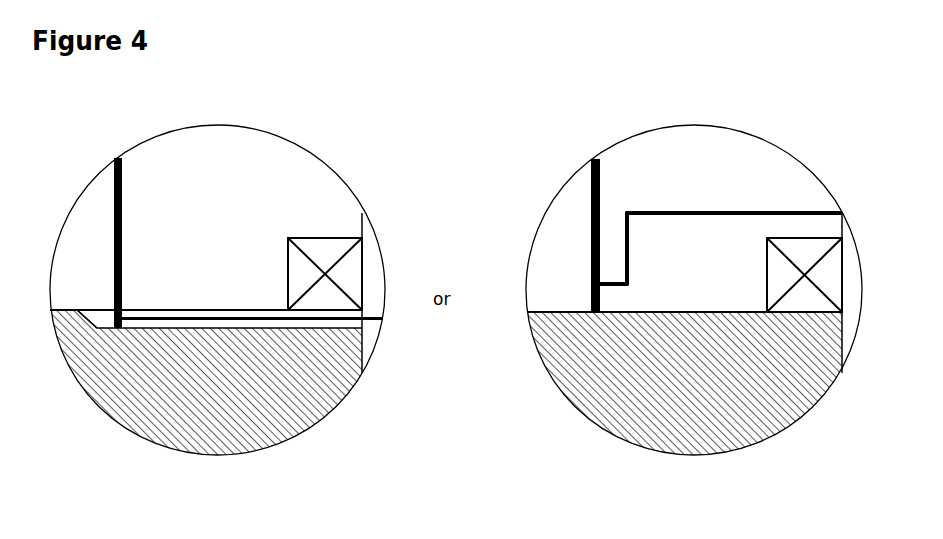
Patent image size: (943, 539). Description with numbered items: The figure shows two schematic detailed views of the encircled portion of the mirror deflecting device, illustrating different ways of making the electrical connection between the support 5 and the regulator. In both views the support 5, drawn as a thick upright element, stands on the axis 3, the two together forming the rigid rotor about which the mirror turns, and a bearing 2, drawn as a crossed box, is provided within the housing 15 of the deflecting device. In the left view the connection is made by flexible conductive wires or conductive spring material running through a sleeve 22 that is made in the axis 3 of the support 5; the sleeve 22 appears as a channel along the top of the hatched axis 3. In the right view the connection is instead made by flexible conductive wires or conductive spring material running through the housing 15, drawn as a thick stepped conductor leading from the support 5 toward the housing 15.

The bearings 2 is at (352, 270).
The axis 3 is at (292, 392).
The support 5 is at (115, 167).
The housing 15 is at (822, 230).
The sleeve 22 is at (100, 318).